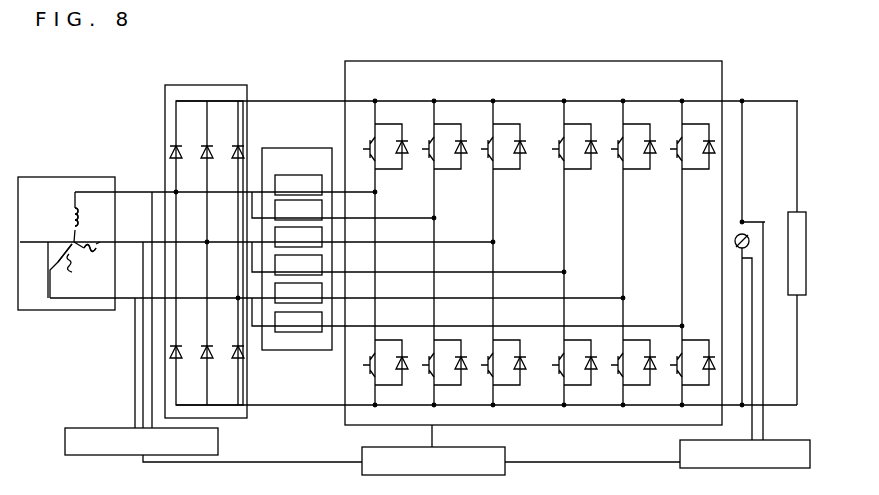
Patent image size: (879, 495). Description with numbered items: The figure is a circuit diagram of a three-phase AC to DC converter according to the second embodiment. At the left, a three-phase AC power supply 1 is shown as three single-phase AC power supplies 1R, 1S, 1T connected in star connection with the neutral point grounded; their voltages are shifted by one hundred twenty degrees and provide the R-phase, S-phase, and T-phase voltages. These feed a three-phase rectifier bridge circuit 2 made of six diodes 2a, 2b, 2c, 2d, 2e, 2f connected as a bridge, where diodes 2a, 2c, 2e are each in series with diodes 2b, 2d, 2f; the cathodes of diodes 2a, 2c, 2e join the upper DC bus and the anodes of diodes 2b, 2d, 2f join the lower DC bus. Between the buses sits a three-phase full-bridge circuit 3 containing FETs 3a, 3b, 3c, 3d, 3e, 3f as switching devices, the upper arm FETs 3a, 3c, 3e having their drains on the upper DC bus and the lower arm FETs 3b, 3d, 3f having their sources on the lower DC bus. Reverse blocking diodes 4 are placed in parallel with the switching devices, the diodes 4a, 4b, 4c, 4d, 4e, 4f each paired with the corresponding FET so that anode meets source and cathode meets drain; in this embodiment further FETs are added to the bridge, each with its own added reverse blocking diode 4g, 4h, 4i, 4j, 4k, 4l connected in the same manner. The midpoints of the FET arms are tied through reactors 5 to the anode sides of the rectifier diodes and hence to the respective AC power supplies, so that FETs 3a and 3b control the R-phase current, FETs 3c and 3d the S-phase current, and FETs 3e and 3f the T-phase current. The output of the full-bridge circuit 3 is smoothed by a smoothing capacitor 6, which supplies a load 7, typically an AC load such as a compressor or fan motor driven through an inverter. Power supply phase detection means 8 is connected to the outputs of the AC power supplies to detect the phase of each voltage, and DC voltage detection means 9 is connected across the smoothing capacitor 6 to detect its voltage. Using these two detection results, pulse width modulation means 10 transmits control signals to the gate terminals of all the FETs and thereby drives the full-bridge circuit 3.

The three-phase AC power supply 1 is at (60, 177).
The AC power supply 1R is at (68, 216).
The AC power supply 1S is at (92, 244).
The AC power supply 1T is at (66, 266).
The three-phase rectifier bridge circuit 2 is at (240, 85).
The diode 2a is at (170, 149).
The diode 2b is at (201, 149).
The diode 2c is at (232, 149).
The diode 2d is at (178, 359).
The diode 2e is at (210, 359).
The diode 2f is at (242, 359).
The three-phase full-bridge circuit 3 is at (285, 148).
The FET 3a is at (296, 177).
The FET 3b is at (296, 203).
The FET 3c is at (296, 230).
The FET 3d is at (296, 258).
The FET 3e is at (296, 286).
The FET 3f is at (296, 315).
The reverse blocking diodes 4 is at (722, 68).
The reverse blocking diode 4a is at (363, 140).
The reverse blocking diode 4b is at (422, 140).
The reverse blocking diode 4c is at (481, 140).
The reverse blocking diode 4d is at (552, 140).
The reverse blocking diode 4e is at (611, 140).
The reverse blocking diode 4f is at (670, 140).
The reverse blocking diode 4g is at (363, 357).
The reverse blocking diode 4h is at (422, 357).
The reverse blocking diode 4i is at (481, 357).
The reverse blocking diode 4j is at (552, 357).
The reverse blocking diode 4k is at (611, 357).
The reverse blocking diode 4l is at (670, 357).
The reactors 5 is at (753, 222).
The smoothing capacitor 6 is at (736, 232).
The load 7 is at (806, 212).
The power supply phase detection means 8 is at (121, 428).
The DC voltage detection means 9 is at (735, 468).
The pulse width modulation means 10 is at (362, 450).